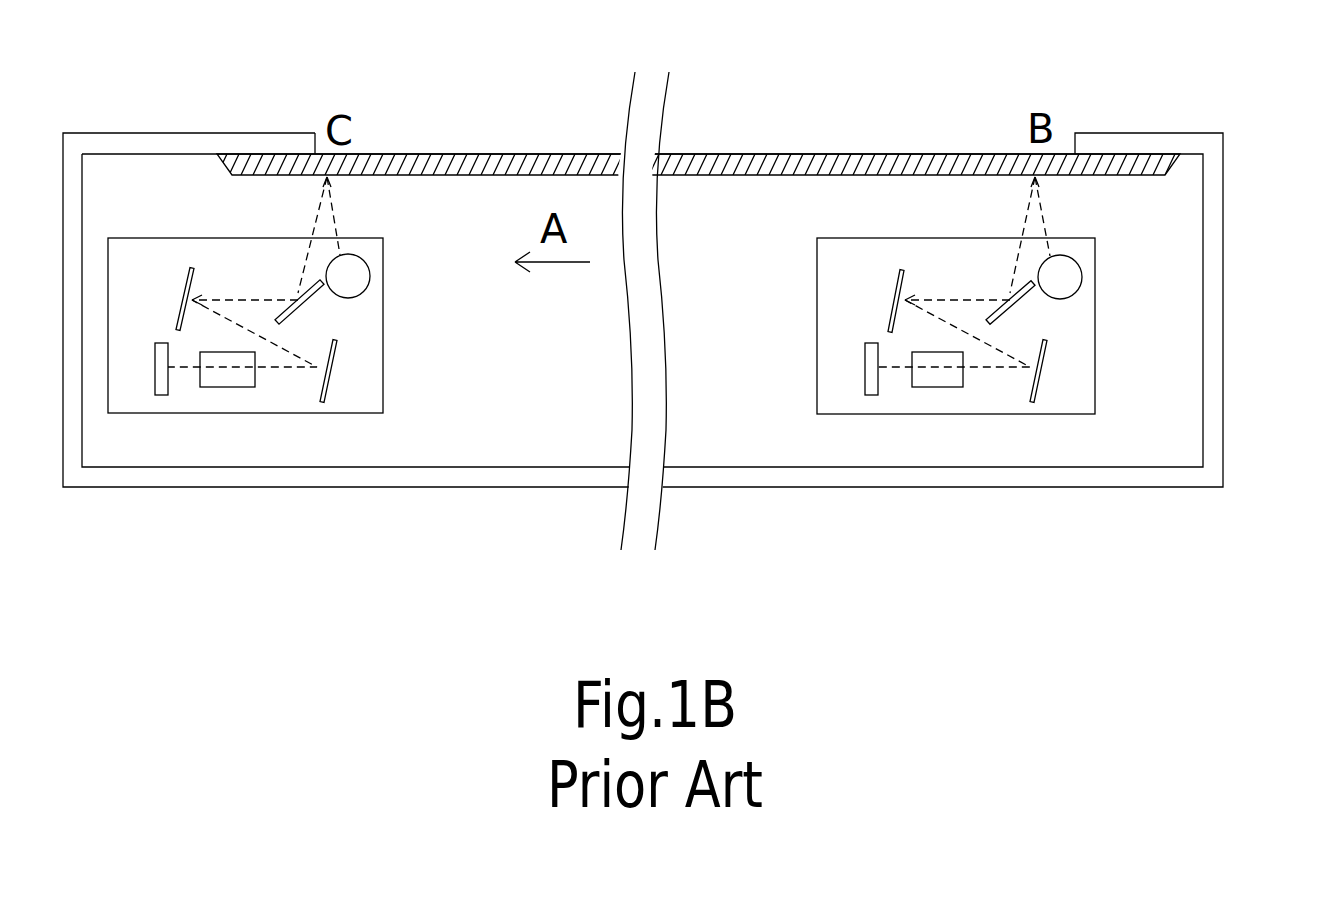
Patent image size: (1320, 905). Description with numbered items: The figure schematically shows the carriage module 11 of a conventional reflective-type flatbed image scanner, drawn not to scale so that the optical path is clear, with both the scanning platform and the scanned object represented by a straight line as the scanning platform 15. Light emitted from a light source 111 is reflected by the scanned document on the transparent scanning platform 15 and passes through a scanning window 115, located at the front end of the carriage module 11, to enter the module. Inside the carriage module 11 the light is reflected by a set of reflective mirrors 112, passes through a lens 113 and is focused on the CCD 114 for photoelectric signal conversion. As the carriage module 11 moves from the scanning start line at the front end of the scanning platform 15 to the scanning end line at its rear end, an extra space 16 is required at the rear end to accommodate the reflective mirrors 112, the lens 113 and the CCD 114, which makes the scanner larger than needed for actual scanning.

The carriage module 11 is at (138, 330).
The scanning platform 15 is at (863, 157).
The extra space 16 is at (182, 188).
The light source 111 is at (357, 280).
The reflective mirrors 112 is at (327, 380).
The lens 113 is at (228, 377).
The CCD 114 is at (158, 380).
The scanning window 115 is at (335, 217).